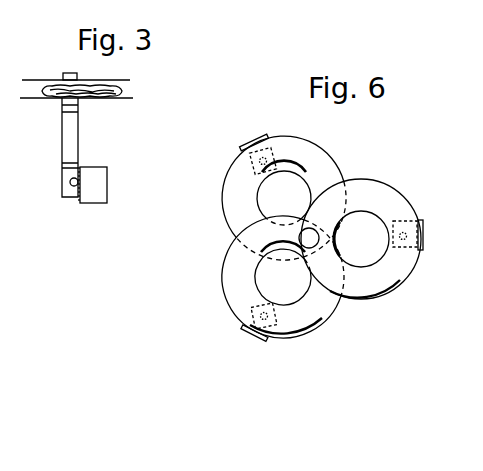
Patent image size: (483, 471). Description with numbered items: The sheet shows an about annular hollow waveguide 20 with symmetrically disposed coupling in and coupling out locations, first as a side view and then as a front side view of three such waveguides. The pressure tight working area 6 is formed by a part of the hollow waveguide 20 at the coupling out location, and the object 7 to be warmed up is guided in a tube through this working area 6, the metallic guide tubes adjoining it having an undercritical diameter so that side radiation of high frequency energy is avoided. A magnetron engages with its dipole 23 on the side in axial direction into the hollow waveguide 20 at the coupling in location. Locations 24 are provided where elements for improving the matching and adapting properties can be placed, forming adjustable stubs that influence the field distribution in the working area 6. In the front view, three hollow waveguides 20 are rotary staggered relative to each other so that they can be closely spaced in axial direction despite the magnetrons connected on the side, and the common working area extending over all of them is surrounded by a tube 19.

In FIG. 3, the pressure tight working area 6 is at (68, 72).
In FIG. 3, the object 7 is at (125, 91).
In FIG. 3, the annular hollow waveguide 20 is at (82, 144).
In FIG. 6, the annular hollow waveguide 20 is at (357, 183).
In FIG. 3, the dipole 23 is at (72, 187).
In FIG. 3, the matching and adapting locations 24 is at (102, 189).
In FIG. 6, the matching and adapting locations 24 is at (256, 142).
In FIG. 6, the tube 19 is at (313, 238).